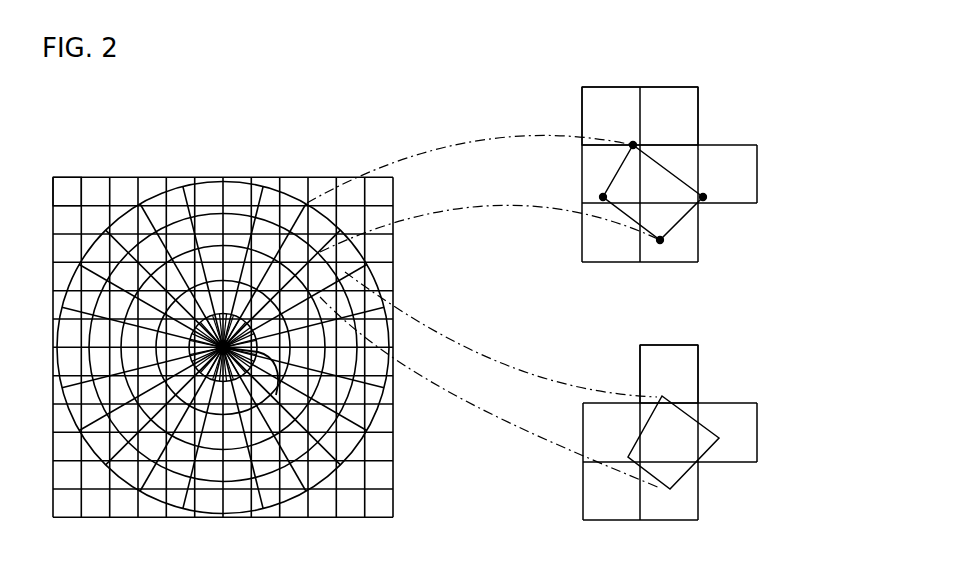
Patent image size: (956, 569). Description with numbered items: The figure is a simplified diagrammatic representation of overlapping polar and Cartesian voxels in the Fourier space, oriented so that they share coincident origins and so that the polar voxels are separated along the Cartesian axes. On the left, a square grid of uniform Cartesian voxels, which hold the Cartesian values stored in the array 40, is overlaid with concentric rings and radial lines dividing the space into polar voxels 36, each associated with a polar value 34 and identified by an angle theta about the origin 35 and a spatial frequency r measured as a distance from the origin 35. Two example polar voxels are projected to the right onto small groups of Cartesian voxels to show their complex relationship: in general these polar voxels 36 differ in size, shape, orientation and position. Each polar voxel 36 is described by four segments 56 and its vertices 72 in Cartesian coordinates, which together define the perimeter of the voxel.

The polar values 34 is at (127, 176).
The polar voxel 36 is at (237, 195).
The origin 35 is at (345, 468).
The array 40 is at (82, 263).
The segments 56 is at (638, 200).
The vertices 72 is at (705, 197).